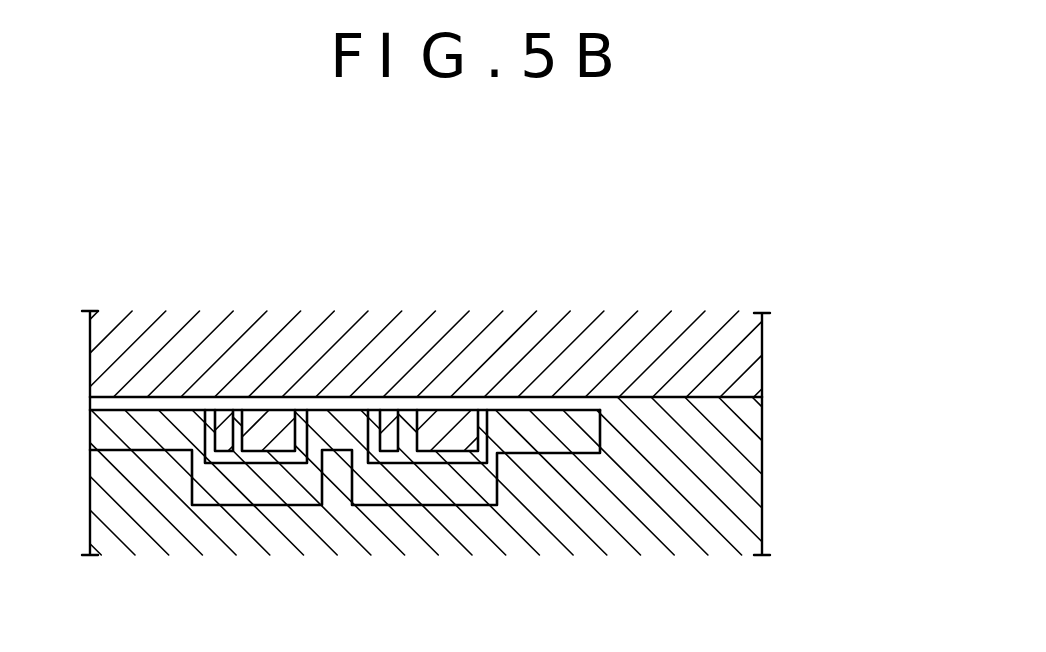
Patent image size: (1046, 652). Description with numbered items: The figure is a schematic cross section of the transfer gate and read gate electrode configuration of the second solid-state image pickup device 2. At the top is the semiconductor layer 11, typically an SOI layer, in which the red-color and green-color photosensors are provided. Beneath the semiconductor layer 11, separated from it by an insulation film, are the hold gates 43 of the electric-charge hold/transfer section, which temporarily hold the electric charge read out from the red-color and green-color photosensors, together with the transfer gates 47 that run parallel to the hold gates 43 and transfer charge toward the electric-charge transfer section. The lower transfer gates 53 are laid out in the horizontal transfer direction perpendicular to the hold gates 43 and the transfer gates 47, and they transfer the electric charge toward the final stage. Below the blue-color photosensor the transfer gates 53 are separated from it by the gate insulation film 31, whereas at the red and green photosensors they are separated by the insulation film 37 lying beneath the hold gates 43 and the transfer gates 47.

The solid-state image pickup device 2 is at (607, 210).
The semiconductor layer 11 is at (743, 382).
The gate insulation film 31 is at (537, 405).
The insulation film 37 is at (297, 397).
The hold gate 43 is at (275, 417).
The transfer gate 47 is at (582, 427).
The transfer gate 53 is at (227, 417).